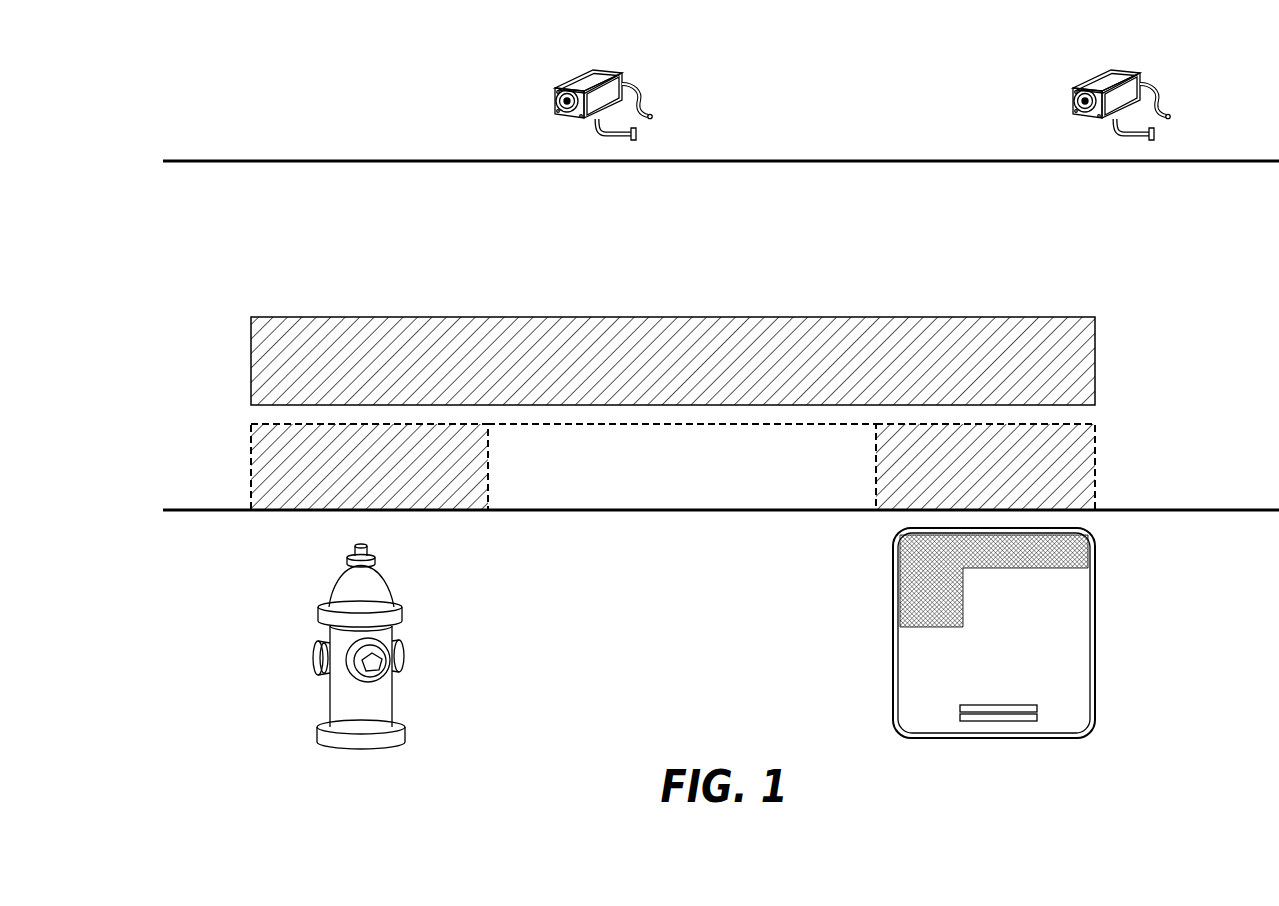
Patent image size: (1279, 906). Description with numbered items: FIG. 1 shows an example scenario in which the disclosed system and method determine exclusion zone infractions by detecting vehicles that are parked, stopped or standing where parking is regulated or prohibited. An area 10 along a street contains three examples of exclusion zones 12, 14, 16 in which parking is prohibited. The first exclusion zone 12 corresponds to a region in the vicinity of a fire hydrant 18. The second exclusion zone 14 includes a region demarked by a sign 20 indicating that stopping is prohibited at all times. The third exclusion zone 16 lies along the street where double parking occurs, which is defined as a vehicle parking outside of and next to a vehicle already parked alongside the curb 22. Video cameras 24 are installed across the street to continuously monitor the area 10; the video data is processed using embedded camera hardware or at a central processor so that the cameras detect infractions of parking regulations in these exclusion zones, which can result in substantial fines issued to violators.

The area 10 is at (1162, 237).
The first exclusion zone 12 is at (262, 470).
The second exclusion zone 14 is at (1067, 470).
The third exclusion zone 16 is at (657, 338).
The fire hydrant 18 is at (393, 693).
The sign 20 is at (1070, 657).
The curb 22 is at (655, 510).
The video cameras 24 is at (607, 71).